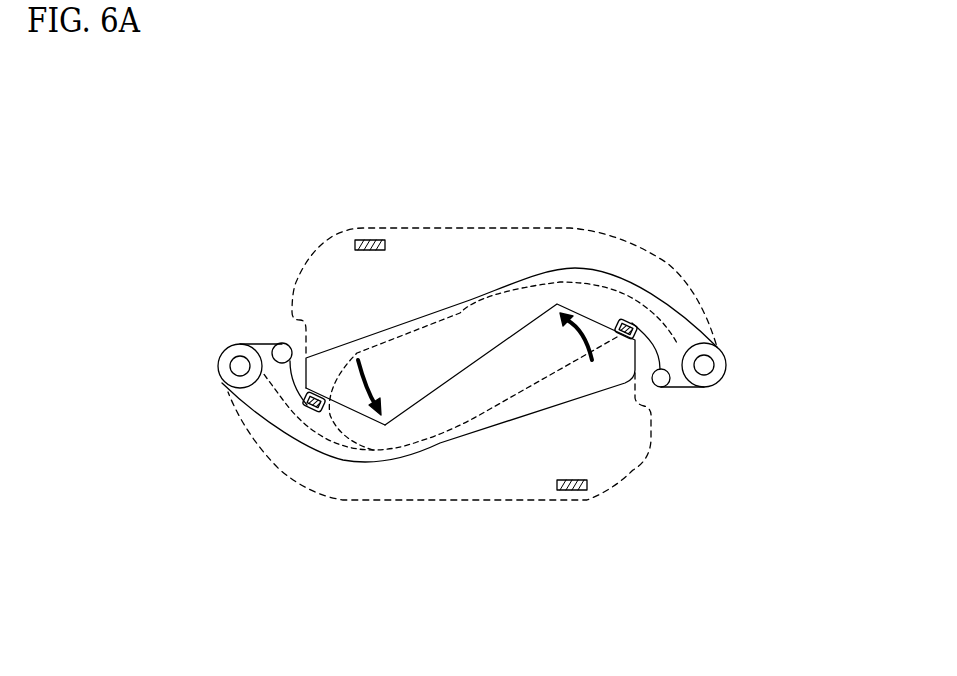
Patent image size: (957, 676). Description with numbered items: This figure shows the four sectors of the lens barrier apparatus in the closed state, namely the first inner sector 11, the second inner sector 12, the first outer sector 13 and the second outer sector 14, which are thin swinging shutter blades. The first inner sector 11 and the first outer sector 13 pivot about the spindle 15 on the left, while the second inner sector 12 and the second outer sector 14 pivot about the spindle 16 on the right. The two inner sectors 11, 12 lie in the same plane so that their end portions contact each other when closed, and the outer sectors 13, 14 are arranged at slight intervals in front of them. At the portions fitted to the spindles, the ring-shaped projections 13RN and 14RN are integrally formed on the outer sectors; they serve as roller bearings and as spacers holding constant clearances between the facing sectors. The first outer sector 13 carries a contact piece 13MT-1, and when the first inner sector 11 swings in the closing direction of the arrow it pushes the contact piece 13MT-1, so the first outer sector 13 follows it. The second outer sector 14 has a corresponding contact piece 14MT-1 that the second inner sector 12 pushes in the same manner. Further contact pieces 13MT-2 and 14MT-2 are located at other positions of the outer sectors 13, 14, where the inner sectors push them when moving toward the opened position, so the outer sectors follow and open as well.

The first inner sector 11 is at (442, 443).
The second inner sector 12 is at (473, 297).
The first outer sector 13 is at (483, 487).
The second outer sector 14 is at (432, 240).
The spindle 15 is at (240, 366).
The spindle 16 is at (705, 365).
The ring-shaped projection 13RN is at (225, 371).
The ring-shaped projection 14RN is at (719, 375).
The contact piece 13MT-1 is at (633, 323).
The contact piece 13MT-2 is at (577, 492).
The contact piece 14MT-1 is at (307, 404).
The contact piece 14MT-2 is at (358, 237).